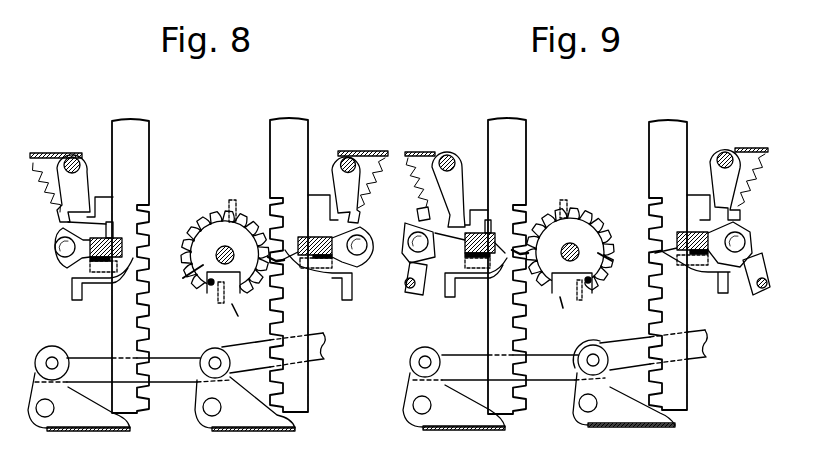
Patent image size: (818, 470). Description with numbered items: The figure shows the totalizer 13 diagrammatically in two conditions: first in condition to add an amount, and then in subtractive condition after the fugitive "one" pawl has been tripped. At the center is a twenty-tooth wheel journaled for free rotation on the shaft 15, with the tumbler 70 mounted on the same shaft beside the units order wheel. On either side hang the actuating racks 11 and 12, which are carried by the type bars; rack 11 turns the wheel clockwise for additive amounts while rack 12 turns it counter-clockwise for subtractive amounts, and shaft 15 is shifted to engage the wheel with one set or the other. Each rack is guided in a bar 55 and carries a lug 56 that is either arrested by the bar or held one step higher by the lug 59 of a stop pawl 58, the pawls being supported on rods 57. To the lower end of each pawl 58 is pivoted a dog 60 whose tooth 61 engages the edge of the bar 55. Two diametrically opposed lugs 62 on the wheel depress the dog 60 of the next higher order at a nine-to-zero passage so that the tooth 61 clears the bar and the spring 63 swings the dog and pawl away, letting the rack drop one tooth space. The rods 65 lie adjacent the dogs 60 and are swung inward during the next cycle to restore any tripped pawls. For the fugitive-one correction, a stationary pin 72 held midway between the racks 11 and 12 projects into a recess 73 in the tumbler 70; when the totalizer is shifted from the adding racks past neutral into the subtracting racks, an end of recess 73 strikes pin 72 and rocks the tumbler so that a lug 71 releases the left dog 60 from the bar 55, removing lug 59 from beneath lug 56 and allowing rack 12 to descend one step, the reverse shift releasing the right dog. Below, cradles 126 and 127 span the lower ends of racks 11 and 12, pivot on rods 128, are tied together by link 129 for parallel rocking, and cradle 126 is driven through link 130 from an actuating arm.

In FIG. 8, the actuating rack 11 is at (273, 153).
In FIG. 9, the actuating rack 11 is at (652, 165).
In FIG. 8, the actuating rack 12 is at (144, 136).
In FIG. 9, the actuating rack 12 is at (523, 146).
In FIG. 8, the totalizer 13 is at (215, 193).
In FIG. 9, the totalizer 13 is at (593, 195).
In FIG. 8, the shaft 15 is at (217, 255).
In FIG. 9, the shaft 15 is at (561, 249).
In FIG. 8, the bar 55 is at (110, 230).
In FIG. 9, the bar 55 is at (492, 216).
In FIG. 8, the lug 56 is at (99, 199).
In FIG. 9, the lug 56 is at (483, 213).
In FIG. 8, the rod 57 is at (79, 160).
In FIG. 9, the rod 57 is at (470, 141).
In FIG. 8, the stop pawl 58 is at (84, 195).
In FIG. 9, the stop pawl 58 is at (459, 192).
In FIG. 8, the lug 59 is at (64, 226).
In FIG. 9, the lug 59 is at (460, 238).
In FIG. 8, the dog 60 is at (87, 267).
In FIG. 9, the dog 60 is at (448, 273).
In FIG. 8, the tooth 61 is at (128, 272).
In FIG. 9, the tooth 61 is at (484, 275).
In FIG. 8, the lug 62 is at (233, 205).
In FIG. 9, the lug 62 is at (563, 200).
In FIG. 8, the spring 63 is at (42, 198).
In FIG. 9, the rod 65 is at (410, 296).
In FIG. 8, the tumbler 70 is at (183, 278).
In FIG. 9, the tumbler 70 is at (612, 261).
In FIG. 8, the lug 71 is at (183, 246).
In FIG. 9, the lug 71 is at (615, 236).
In FIG. 8, the stationary pin 72 is at (204, 290).
In FIG. 9, the stationary pin 72 is at (595, 290).
In FIG. 8, the recess 73 is at (238, 316).
In FIG. 9, the recess 73 is at (560, 300).
In FIG. 8, the cradle 126 is at (268, 417).
In FIG. 9, the cradle 126 is at (640, 413).
In FIG. 8, the cradle 127 is at (83, 420).
In FIG. 9, the cradle 127 is at (475, 417).
In FIG. 8, the rod 128 is at (44, 415).
In FIG. 9, the rod 128 is at (413, 408).
In FIG. 8, the link 129 is at (101, 362).
In FIG. 9, the link 129 is at (478, 358).
In FIG. 8, the link 130 is at (243, 357).
In FIG. 9, the link 130 is at (620, 357).